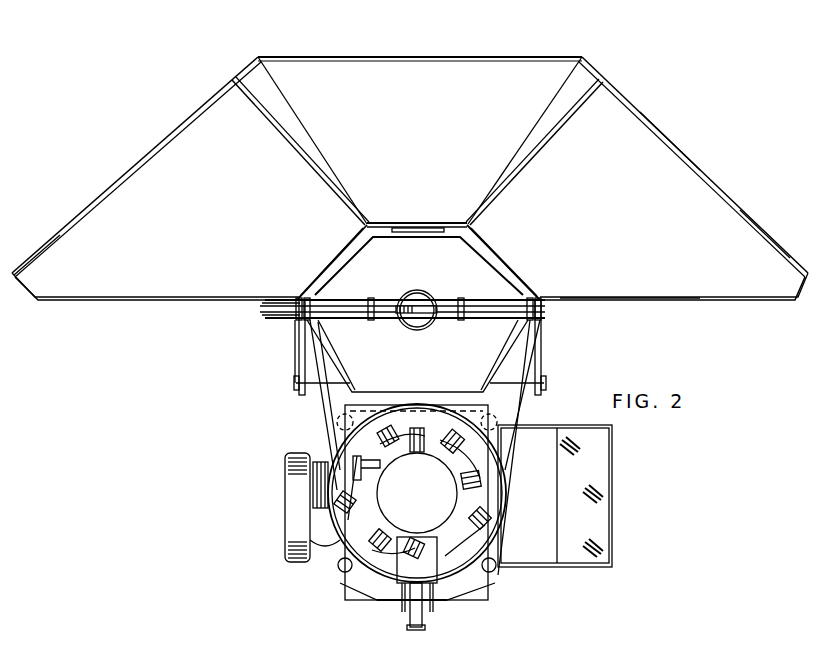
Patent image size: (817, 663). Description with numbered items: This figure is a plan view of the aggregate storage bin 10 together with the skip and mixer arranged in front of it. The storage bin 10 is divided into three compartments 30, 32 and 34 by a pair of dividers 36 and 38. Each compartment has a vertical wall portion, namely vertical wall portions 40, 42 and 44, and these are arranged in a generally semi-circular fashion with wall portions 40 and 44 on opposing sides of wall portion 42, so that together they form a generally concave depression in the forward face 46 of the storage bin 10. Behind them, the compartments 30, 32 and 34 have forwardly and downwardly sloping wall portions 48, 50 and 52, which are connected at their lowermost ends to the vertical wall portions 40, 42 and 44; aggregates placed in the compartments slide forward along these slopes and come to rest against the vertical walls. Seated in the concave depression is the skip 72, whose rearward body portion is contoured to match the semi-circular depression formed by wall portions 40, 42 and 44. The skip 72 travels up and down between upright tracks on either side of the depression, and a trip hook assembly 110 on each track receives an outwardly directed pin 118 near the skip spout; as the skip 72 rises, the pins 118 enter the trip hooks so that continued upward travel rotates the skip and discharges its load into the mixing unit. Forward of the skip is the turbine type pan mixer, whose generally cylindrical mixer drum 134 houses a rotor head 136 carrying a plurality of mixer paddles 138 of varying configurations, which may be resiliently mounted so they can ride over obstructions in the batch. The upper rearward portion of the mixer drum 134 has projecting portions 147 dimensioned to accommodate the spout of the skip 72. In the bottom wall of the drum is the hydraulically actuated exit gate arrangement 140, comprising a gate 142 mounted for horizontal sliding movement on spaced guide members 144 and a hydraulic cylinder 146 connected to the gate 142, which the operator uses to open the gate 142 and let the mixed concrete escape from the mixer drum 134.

The aggregate storage bin 10 is at (676, 134).
The compartment 30 is at (212, 217).
The compartment 32 is at (425, 119).
The compartment 34 is at (630, 221).
The divider 36 is at (280, 136).
The divider 38 is at (567, 125).
The vertical wall portion 40 is at (322, 265).
The vertical wall portion 42 is at (405, 223).
The vertical wall portion 44 is at (505, 258).
The forward face 46 is at (610, 302).
The forwardly and downwardly sloping wall portion 48 is at (108, 221).
The forwardly and downwardly sloping wall portion 50 is at (310, 72).
The forwardly and downwardly sloping wall portion 52 is at (733, 224).
The skip 72 is at (500, 360).
The trip hook assembly 110 is at (298, 369).
The pin 118 is at (305, 386).
The mixer drum 134 is at (310, 538).
The rotor head 136 is at (385, 488).
The mixer paddle 138 is at (392, 452).
The exit gate arrangement 140 is at (388, 565).
The gate 142 is at (398, 576).
The guide member 144 is at (445, 602).
The hydraulic cylinder 146 is at (423, 618).
The projecting portion 147 is at (500, 418).